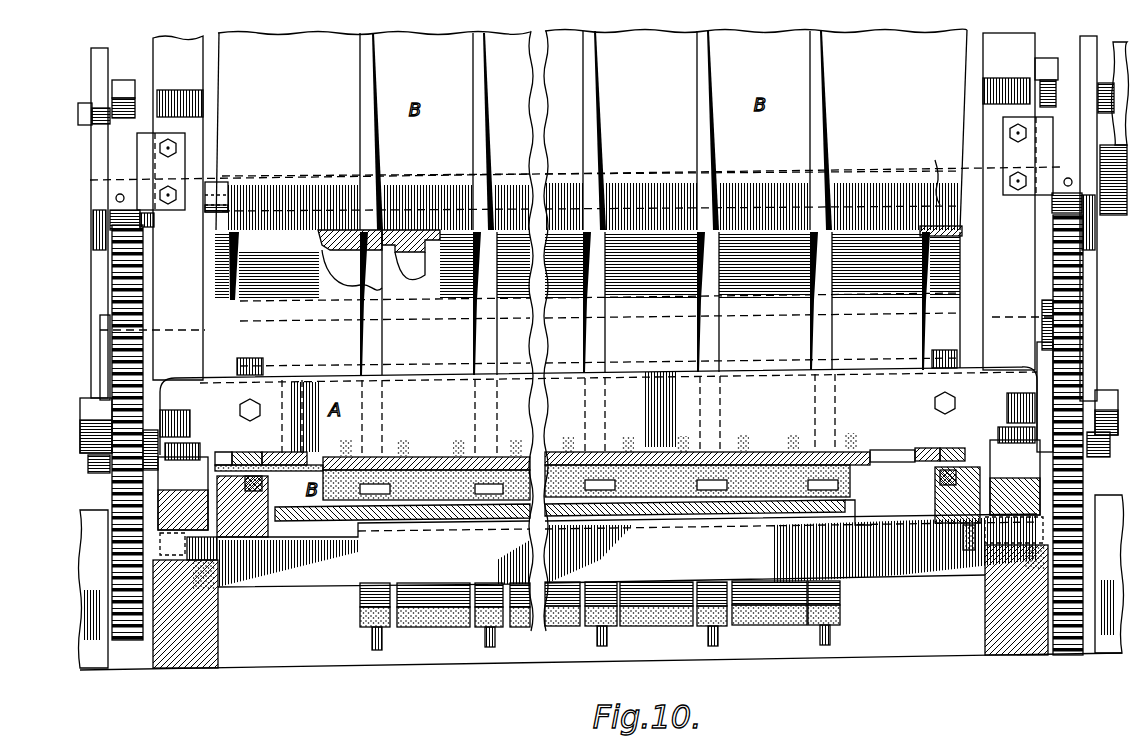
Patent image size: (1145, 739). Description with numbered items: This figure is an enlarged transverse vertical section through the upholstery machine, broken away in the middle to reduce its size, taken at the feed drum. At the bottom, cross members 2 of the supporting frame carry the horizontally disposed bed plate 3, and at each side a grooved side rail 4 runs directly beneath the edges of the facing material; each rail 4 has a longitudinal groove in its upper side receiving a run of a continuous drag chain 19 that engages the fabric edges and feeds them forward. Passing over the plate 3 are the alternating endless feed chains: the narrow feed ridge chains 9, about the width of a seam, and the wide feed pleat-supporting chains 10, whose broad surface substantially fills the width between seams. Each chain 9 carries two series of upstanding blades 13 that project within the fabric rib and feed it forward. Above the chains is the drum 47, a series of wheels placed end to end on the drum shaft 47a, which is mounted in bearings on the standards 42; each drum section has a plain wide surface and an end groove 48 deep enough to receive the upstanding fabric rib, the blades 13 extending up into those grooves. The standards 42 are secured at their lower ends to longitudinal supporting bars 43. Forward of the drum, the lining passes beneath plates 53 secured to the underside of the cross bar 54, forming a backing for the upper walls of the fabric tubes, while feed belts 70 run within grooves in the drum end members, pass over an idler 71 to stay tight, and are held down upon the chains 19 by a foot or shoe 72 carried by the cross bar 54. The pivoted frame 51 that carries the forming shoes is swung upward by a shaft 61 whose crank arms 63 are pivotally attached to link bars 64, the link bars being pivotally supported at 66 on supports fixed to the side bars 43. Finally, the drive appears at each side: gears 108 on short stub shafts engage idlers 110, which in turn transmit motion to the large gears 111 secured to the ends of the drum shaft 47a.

The cross members 2 is at (300, 586).
The bed plate 3 is at (845, 506).
The grooved side rails 4 is at (268, 520).
The feed ridge chains 9 is at (362, 628).
The feed pleat-supporting chains 10 is at (449, 628).
The outstanding blades 13 is at (374, 650).
The drag chain 19 is at (262, 488).
The standards 42 is at (163, 54).
The supporting frame bars 43 is at (176, 493).
The drum 47 is at (594, 203).
The drum shaft 47a is at (181, 336).
The end groove 48 is at (368, 345).
The frame 51 is at (140, 128).
The plates 53 is at (432, 456).
The cross bar 54 is at (598, 411).
The shaft 61 is at (215, 197).
The crank arms 63 is at (117, 162).
The link bars 64 is at (92, 240).
The pivot 66 is at (90, 462).
The feed belts 70 is at (250, 232).
The idler 71 is at (932, 173).
The foot or shoe 72 is at (272, 456).
The gears 108 is at (130, 642).
The idlers 110 is at (118, 420).
The large gears 111 is at (118, 292).